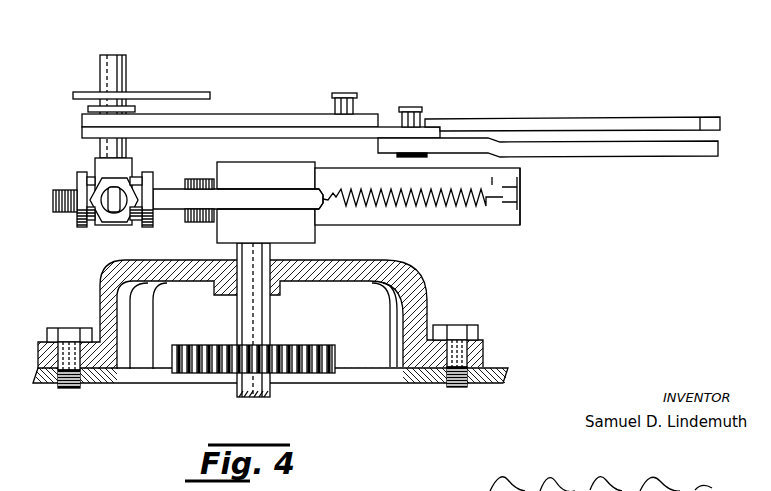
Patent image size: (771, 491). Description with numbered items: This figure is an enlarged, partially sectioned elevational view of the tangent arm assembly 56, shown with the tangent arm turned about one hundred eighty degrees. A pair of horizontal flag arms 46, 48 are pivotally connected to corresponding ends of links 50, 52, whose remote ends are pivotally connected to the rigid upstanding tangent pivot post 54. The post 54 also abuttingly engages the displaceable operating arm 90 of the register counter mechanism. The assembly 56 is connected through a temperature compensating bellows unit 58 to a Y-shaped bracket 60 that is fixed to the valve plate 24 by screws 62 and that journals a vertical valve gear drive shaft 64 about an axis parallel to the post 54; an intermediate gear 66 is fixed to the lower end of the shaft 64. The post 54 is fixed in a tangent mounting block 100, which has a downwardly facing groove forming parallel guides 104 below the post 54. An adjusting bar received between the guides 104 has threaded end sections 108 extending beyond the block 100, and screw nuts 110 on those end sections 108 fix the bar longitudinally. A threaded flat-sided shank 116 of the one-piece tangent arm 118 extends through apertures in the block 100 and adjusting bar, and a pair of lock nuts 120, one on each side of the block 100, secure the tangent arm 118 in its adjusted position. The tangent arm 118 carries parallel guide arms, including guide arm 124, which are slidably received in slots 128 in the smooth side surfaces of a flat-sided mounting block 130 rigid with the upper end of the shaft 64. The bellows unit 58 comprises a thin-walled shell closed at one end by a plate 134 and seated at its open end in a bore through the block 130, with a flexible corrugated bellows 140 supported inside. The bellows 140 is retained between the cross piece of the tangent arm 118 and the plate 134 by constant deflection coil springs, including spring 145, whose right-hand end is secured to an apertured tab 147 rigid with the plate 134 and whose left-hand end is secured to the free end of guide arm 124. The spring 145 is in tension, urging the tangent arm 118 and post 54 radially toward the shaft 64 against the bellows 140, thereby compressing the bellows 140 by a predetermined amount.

The valve plate 24 is at (498, 366).
The horizontal flag arm 46 is at (603, 100).
The horizontal flag arm 48 is at (635, 147).
The link 50 is at (293, 122).
The link 52 is at (385, 128).
The tangent pivot post 54 is at (125, 62).
The tangent arm assembly 56 is at (70, 218).
The temperature compensating bellows unit 58 is at (527, 215).
The Y-shaped bracket 60 is at (406, 268).
The screw 62 is at (72, 337).
The valve gear drive shaft 64 is at (265, 316).
The intermediate gear 66 is at (327, 347).
The operating arm 90 is at (182, 93).
The tangent mounting block 100 is at (124, 167).
The guide 104 is at (101, 223).
The threaded end section 108 is at (118, 197).
The screw nut 110 is at (92, 185).
The shank 116 is at (62, 190).
The tangent arm 118 is at (178, 212).
The lock nut 120 is at (80, 227).
The guide arm 124 is at (312, 200).
The slot 128 is at (240, 198).
The mounting block 130 is at (308, 162).
The plate 134 is at (526, 180).
The bellows 140 is at (204, 180).
The coil spring 145 is at (468, 207).
The apertured tab 147 is at (514, 197).